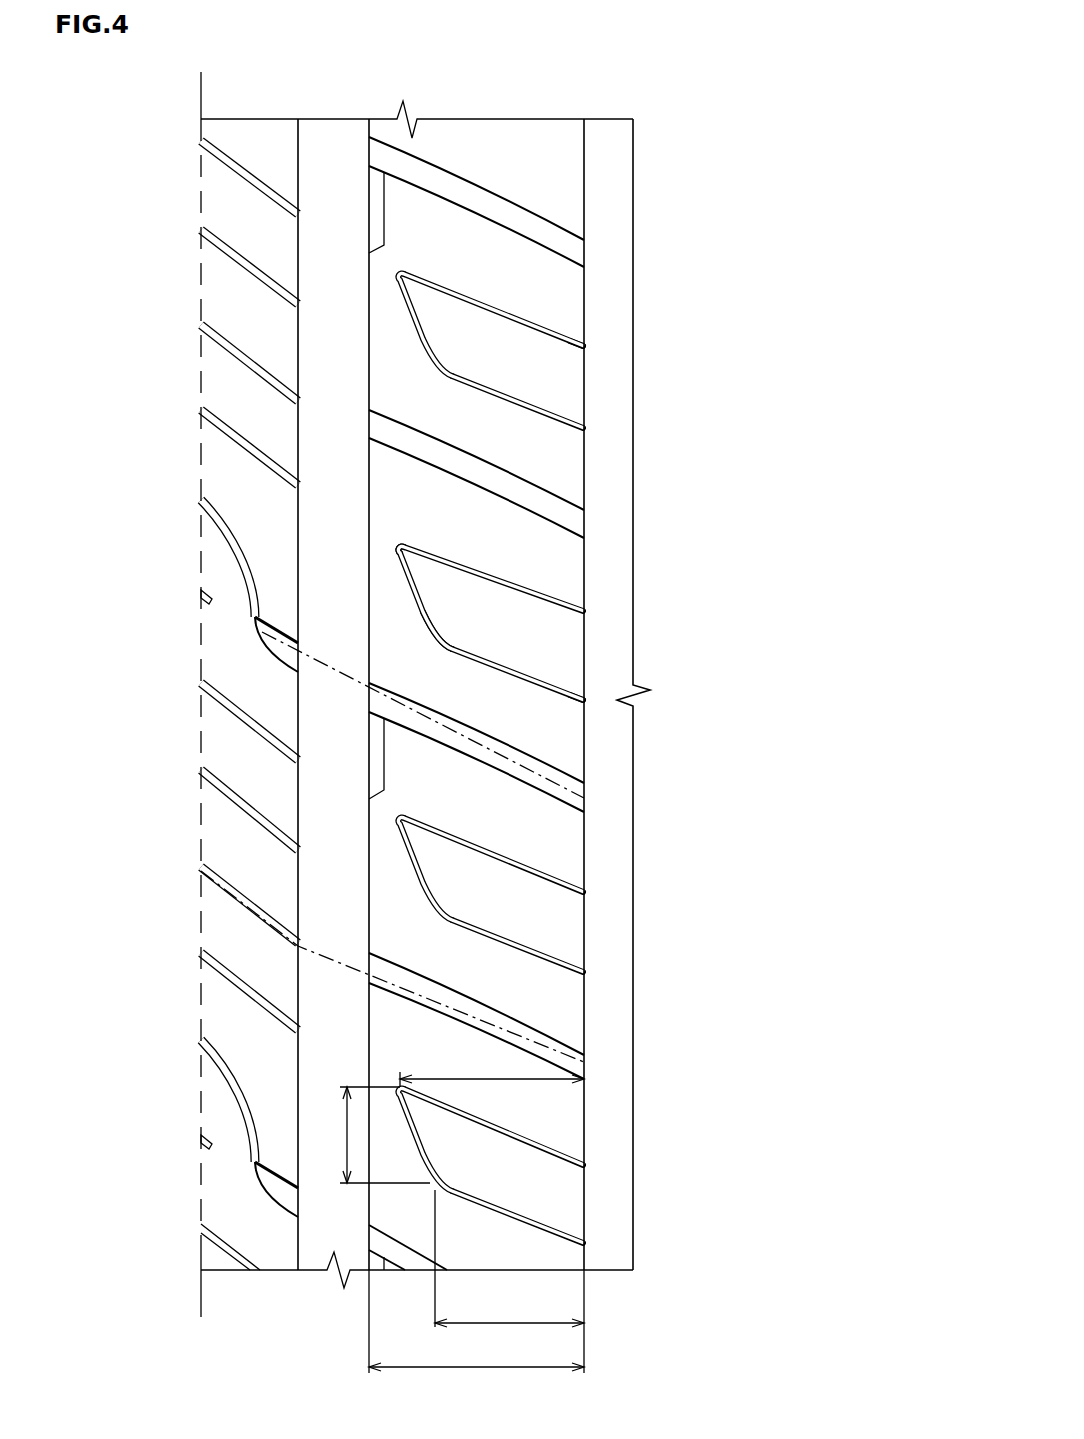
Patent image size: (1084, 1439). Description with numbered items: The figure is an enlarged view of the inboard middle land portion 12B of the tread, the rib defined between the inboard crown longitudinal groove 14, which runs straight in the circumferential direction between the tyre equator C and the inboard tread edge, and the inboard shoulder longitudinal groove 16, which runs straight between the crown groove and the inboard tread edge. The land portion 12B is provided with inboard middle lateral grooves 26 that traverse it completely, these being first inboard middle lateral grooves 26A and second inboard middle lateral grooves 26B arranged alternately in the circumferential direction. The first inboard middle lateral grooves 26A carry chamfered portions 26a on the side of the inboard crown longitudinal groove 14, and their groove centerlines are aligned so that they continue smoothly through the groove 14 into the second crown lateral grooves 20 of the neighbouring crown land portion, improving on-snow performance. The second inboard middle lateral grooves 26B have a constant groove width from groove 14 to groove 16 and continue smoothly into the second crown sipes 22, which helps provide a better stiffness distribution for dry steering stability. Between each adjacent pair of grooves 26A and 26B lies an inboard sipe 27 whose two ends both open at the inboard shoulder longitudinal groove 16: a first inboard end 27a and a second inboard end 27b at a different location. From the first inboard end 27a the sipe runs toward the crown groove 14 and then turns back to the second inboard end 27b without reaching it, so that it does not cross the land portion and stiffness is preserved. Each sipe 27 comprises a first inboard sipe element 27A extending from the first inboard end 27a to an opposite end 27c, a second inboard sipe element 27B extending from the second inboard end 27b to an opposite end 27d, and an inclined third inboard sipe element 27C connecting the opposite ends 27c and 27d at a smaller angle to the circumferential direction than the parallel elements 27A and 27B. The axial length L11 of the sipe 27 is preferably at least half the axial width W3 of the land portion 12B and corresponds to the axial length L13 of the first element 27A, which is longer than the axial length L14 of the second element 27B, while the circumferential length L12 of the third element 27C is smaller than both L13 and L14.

The tyre equator C is at (200, 681).
The inboard crown longitudinal groove 14 is at (330, 160).
The inboard middle land portion 12B is at (462, 150).
The inboard shoulder longitudinal groove 16 is at (607, 150).
The second crown lateral grooves 20 is at (268, 643).
The second crown sipes 22 is at (245, 906).
The inboard middle lateral grooves 26 is at (594, 703).
The first inboard middle lateral grooves 26A is at (533, 233).
The second inboard middle lateral grooves 26B is at (545, 507).
The chamfered portions 26a is at (380, 758).
The inboard sipes 27 is at (547, 333).
The first inboard sipe element 27A is at (505, 588).
The second inboard sipe element 27B is at (538, 681).
The third inboard sipe element 27C is at (422, 600).
The first inboard end 27a is at (584, 622).
The second inboard end 27b is at (584, 702).
The opposite end of first inboard sipe element 27c is at (402, 545).
The opposite end of second inboard sipe element 27d is at (438, 643).
The axial length of inboard sipe L11 is at (592, 1063).
The axial length of first inboard sipe element L13 is at (492, 1080).
The circumferential length of third inboard sipe element L12 is at (347, 1137).
The axial length of second inboard sipe element L14 is at (509, 1281).
The axial width of inboard middle land portion W3 is at (476, 1321).